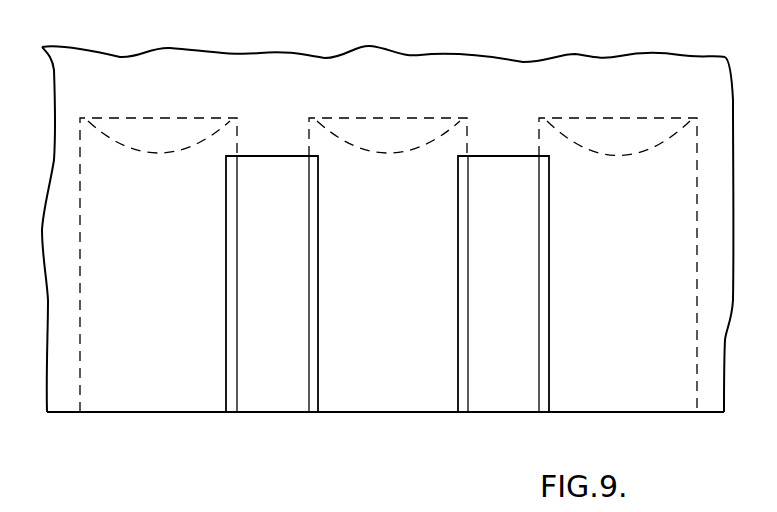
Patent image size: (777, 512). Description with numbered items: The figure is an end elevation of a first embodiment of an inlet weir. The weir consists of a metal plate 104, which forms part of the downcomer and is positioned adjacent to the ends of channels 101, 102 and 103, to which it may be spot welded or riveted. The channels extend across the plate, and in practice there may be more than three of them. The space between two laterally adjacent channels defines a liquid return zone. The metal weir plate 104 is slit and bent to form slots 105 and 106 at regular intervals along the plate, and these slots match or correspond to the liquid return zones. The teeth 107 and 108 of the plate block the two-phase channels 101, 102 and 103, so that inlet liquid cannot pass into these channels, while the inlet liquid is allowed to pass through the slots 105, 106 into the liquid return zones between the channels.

The channel 101 is at (170, 117).
The channel 102 is at (406, 118).
The channel 103 is at (585, 118).
The metal plate 104 is at (160, 370).
The slot 105 is at (268, 372).
The slot 106 is at (510, 378).
The tooth 107 is at (383, 385).
The tooth 108 is at (630, 393).